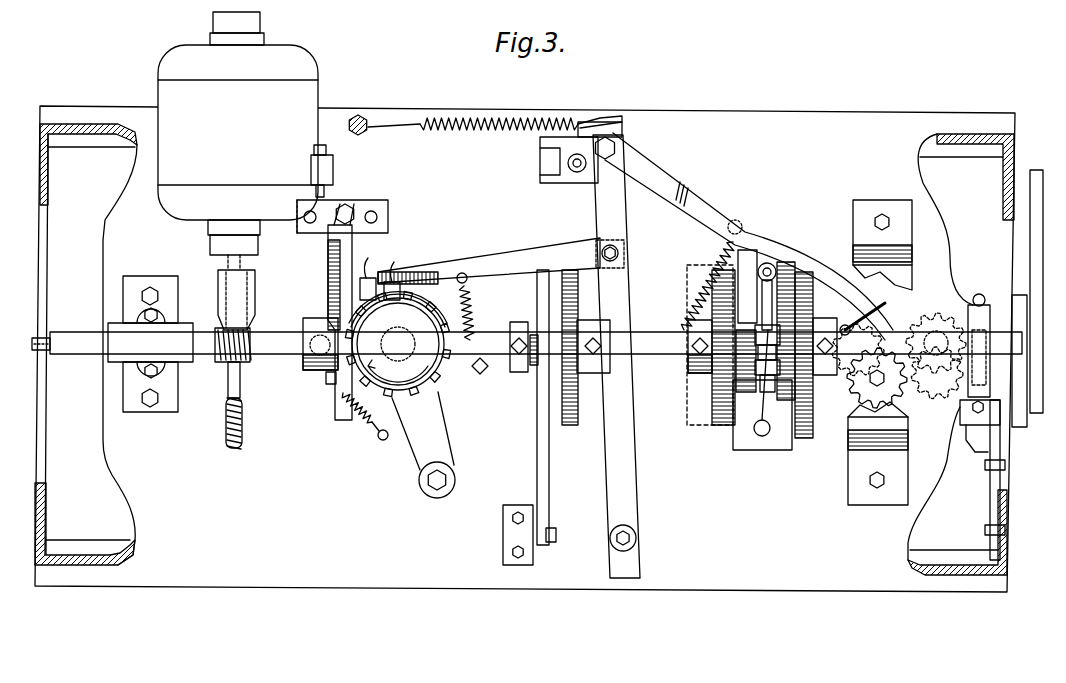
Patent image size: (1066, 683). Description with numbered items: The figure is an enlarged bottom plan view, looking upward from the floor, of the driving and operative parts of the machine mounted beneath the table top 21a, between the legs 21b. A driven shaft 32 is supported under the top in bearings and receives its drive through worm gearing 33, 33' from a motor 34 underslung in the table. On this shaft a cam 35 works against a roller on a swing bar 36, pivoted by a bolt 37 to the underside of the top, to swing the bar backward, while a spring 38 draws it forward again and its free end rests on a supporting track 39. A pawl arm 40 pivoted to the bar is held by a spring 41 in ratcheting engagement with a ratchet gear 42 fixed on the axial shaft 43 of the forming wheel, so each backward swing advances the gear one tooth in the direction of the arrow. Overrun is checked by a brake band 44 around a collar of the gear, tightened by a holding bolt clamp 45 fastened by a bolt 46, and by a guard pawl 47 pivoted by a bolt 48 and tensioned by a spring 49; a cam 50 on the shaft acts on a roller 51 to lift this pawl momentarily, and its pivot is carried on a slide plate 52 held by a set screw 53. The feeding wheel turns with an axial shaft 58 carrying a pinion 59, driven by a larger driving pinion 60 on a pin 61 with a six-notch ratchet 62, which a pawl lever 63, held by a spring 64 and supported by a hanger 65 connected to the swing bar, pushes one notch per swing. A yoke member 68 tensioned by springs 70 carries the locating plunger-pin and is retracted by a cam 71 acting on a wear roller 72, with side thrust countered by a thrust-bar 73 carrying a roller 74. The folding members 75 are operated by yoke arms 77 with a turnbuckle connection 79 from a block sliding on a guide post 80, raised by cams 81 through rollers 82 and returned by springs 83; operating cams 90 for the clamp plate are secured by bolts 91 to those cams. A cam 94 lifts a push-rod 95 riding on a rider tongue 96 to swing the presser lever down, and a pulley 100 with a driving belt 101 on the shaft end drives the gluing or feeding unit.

The top 21a is at (786, 120).
The legs 21b is at (962, 603).
The driven shaft 32 is at (88, 352).
The worm gearing 33 is at (249, 405).
The worm gearing 33' is at (218, 363).
The motor 34 is at (238, 171).
The cam 35 is at (598, 290).
The swing bar 36 is at (612, 226).
The bolt 37 is at (637, 541).
The spring 38 is at (495, 122).
The supporting track 39 is at (540, 155).
The pawl arm 40 is at (498, 262).
The spring 41 is at (472, 308).
The ratchet gear 42 is at (445, 376).
The axial shaft 43 is at (392, 340).
The band 44 is at (440, 300).
The holding bolt clamp 45 is at (372, 276).
The bolt 46 is at (455, 480).
The guard pawl 47 is at (332, 300).
The bolt 48 is at (350, 212).
The spring 49 is at (360, 430).
The cam 50 is at (340, 275).
The roller 51 is at (315, 360).
The slide plate 52 is at (388, 218).
The set screw 53 is at (326, 197).
The axial shaft 58 is at (930, 322).
The pinion 59 is at (944, 333).
The driving pinion 60 is at (905, 392).
The pin 61 is at (855, 395).
The ratchet 62 is at (872, 392).
The pawl lever 63 is at (775, 250).
The spring 64 is at (710, 252).
The hanger 65 is at (880, 308).
The yoke member 68 is at (980, 294).
The springs 70 is at (972, 300).
The cam 71 is at (990, 392).
The wear roller 72 is at (955, 400).
The thrust-bar 73 is at (998, 440).
The roller 74 is at (972, 440).
The folding members 75 is at (780, 300).
The yoke arms 77 is at (748, 250).
The screw-and-sleeve connection 79 is at (764, 436).
The guide post 80 is at (790, 320).
The cams 81 is at (767, 262).
The rollers 82 is at (720, 385).
The springs 83 is at (720, 438).
The operating cams 90 is at (690, 293).
The bolts 91 is at (690, 360).
The cam 94 is at (535, 300).
The push-rod 95 is at (535, 370).
The rider tongue 96 is at (537, 450).
The pulley 100 is at (1018, 300).
The driving belt 101 is at (1038, 172).